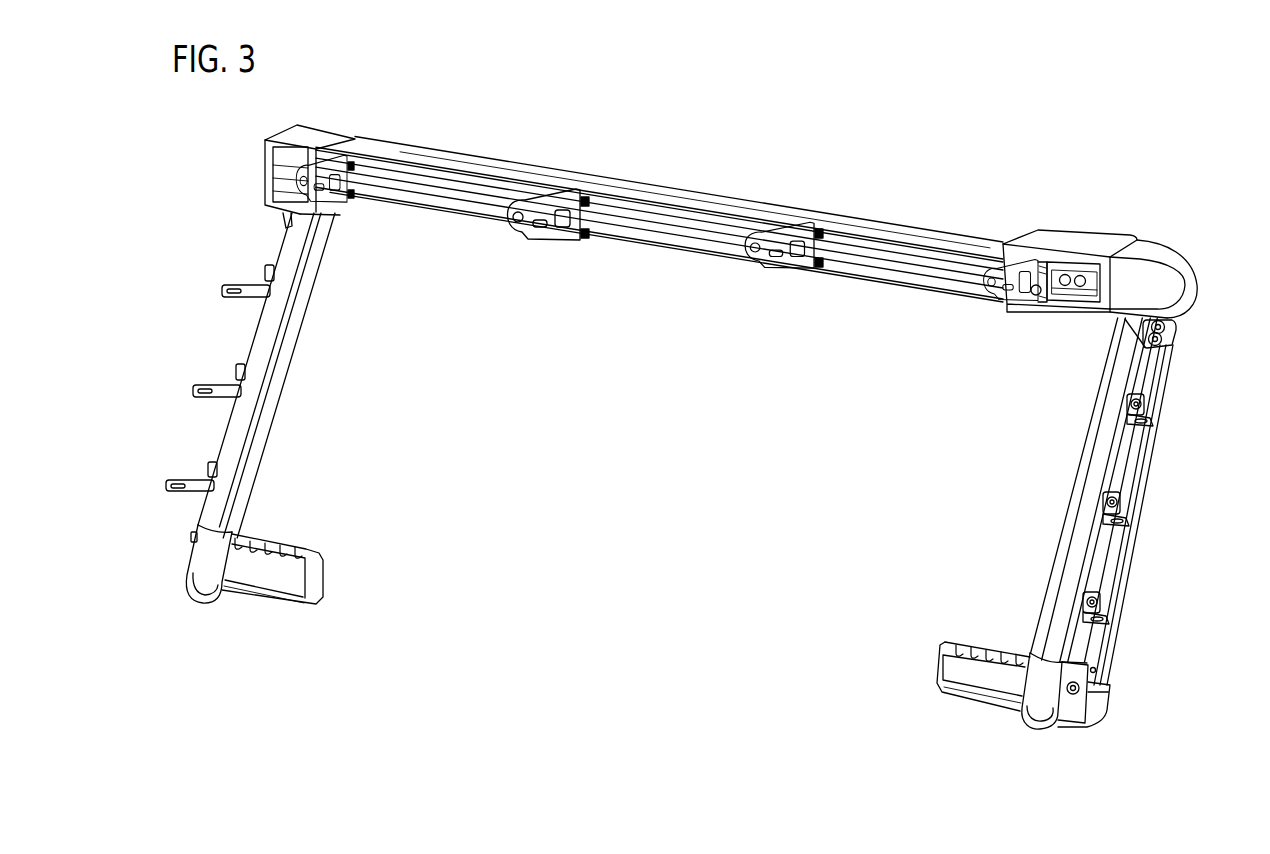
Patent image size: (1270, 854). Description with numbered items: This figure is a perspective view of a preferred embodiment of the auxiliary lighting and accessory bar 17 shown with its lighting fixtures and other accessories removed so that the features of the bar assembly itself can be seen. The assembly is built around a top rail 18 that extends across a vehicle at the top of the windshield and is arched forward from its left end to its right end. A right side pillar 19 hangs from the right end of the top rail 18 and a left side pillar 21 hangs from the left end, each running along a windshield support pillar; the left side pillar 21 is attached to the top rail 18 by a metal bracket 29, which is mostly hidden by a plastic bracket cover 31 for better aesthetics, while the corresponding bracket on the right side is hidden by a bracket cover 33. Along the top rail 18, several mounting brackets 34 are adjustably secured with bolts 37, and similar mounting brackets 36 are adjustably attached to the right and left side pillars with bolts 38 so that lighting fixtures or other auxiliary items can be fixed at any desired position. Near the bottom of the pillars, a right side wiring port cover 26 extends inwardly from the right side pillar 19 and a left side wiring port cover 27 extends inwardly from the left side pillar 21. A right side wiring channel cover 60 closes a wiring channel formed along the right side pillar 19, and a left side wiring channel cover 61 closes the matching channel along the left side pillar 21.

The auxiliary light and accessory bar assembly 17 is at (845, 163).
The top rail 18 is at (626, 189).
The right side pillar 19 is at (285, 347).
The left side pillar 21 is at (1125, 455).
The right side wiring port cover 26 is at (273, 574).
The left side wiring port cover 27 is at (982, 679).
The metal bracket 29 is at (1170, 332).
The plastic bracket cover 31 is at (1170, 285).
The bracket cover 33 is at (320, 137).
The mounting brackets 34 is at (341, 201).
The mounting brackets 36 is at (226, 290).
The bolts 37 is at (594, 205).
The bolts 38 is at (267, 270).
The right side wiring channel cover 60 is at (234, 450).
The left side wiring channel cover 61 is at (1073, 573).